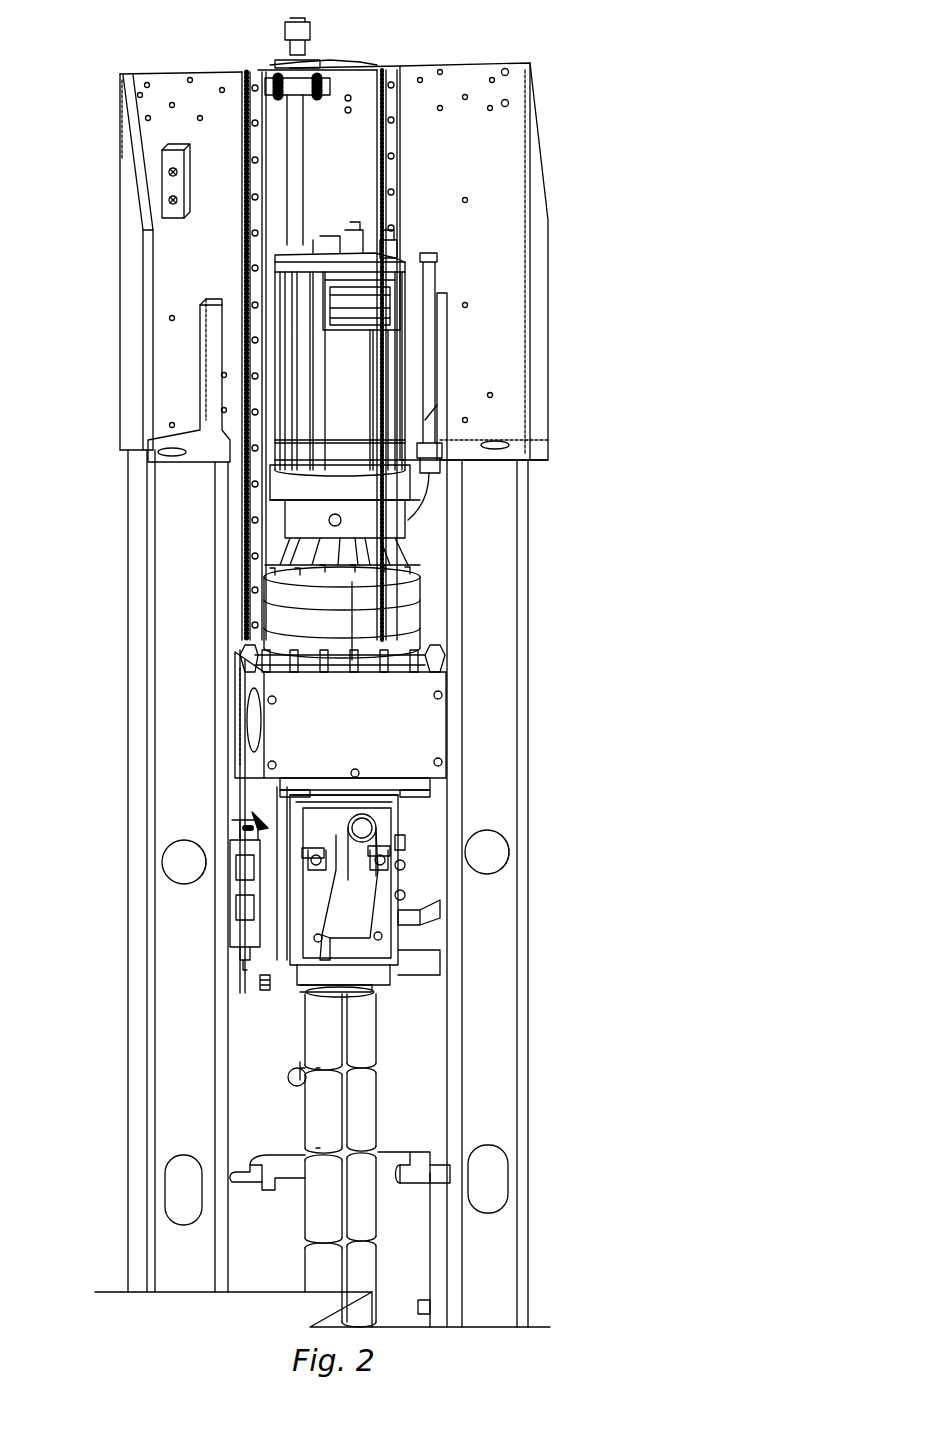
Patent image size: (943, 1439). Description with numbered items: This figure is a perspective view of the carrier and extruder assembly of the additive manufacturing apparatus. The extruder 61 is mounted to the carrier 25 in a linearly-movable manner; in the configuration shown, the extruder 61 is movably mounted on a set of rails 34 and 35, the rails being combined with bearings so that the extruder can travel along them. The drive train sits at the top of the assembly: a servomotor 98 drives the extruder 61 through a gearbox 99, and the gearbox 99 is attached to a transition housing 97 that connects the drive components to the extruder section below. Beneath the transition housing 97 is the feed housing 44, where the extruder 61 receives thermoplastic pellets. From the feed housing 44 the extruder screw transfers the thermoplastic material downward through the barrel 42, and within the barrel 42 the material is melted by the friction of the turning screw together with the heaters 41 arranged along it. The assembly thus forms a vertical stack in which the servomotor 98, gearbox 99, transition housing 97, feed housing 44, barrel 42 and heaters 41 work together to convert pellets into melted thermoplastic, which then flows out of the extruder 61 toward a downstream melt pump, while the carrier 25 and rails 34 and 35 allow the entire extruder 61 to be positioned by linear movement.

The carrier 25 is at (636, 303).
The rail 34 is at (258, 72).
The rail 35 is at (389, 70).
The heaters 41 is at (362, 1033).
The barrel 42 is at (368, 1157).
The feed housing 44 is at (383, 817).
The extruder 61 is at (252, 812).
The transition housing 97 is at (408, 733).
The servomotor 98 is at (350, 390).
The gearbox 99 is at (385, 605).